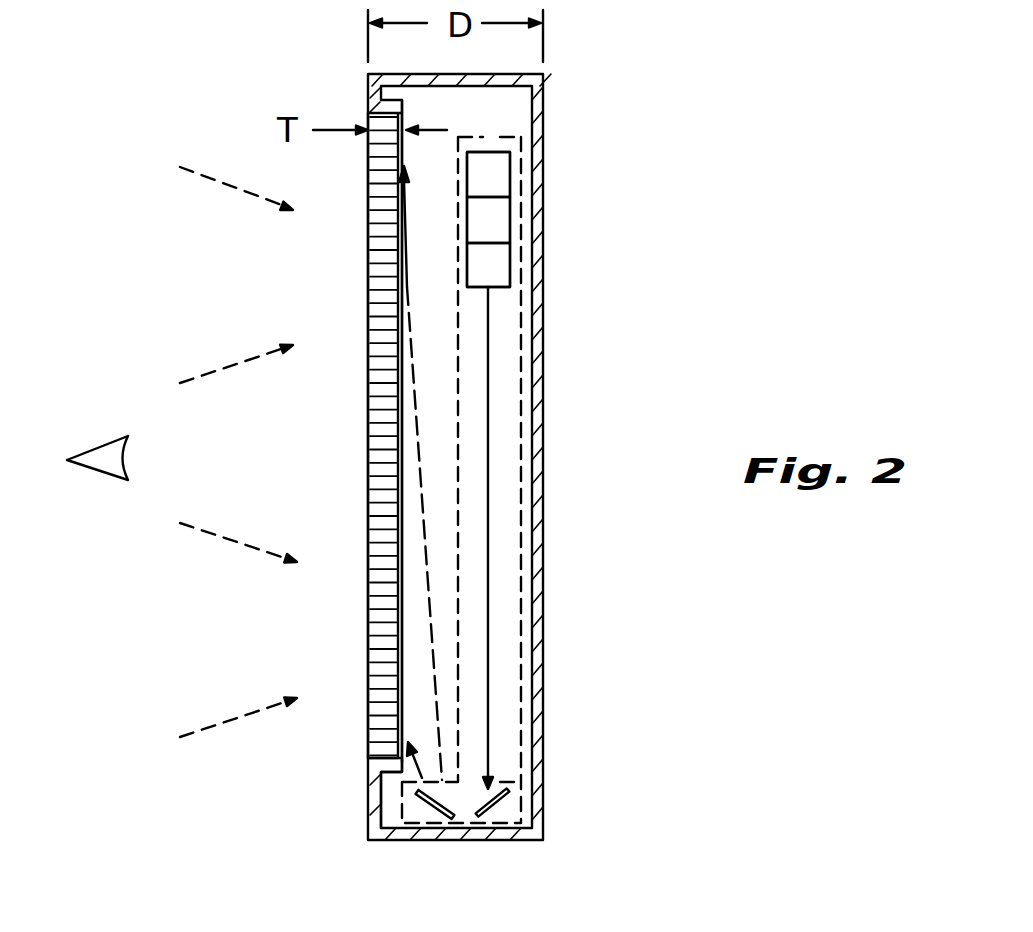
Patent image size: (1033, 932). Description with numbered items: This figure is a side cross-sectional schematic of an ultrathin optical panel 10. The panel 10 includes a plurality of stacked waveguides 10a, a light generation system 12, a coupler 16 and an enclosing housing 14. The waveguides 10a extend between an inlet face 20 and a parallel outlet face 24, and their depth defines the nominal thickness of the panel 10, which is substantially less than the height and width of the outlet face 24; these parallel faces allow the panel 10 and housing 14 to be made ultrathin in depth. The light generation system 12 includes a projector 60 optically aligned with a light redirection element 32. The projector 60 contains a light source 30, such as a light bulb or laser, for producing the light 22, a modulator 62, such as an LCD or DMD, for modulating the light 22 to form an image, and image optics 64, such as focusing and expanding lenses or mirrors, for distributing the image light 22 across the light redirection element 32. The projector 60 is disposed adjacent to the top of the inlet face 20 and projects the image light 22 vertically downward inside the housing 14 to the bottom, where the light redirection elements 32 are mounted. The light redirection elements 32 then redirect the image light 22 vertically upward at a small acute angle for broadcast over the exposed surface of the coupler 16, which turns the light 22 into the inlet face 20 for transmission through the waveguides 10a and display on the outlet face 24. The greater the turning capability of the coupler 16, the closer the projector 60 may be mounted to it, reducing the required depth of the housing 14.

The ultrathin optical panel 10 is at (262, 300).
The stacked waveguides 10a is at (369, 622).
The light generation system 12 is at (521, 427).
The housing 14 is at (547, 515).
The coupler 16 is at (400, 374).
The inlet face 20 is at (370, 730).
The image light 22 is at (490, 690).
The outlet face 24 is at (370, 403).
The light source 30 is at (512, 181).
The light redirection element 32 is at (495, 873).
The projector 60 is at (493, 148).
The modulator 62 is at (512, 223).
The image optics 64 is at (512, 268).